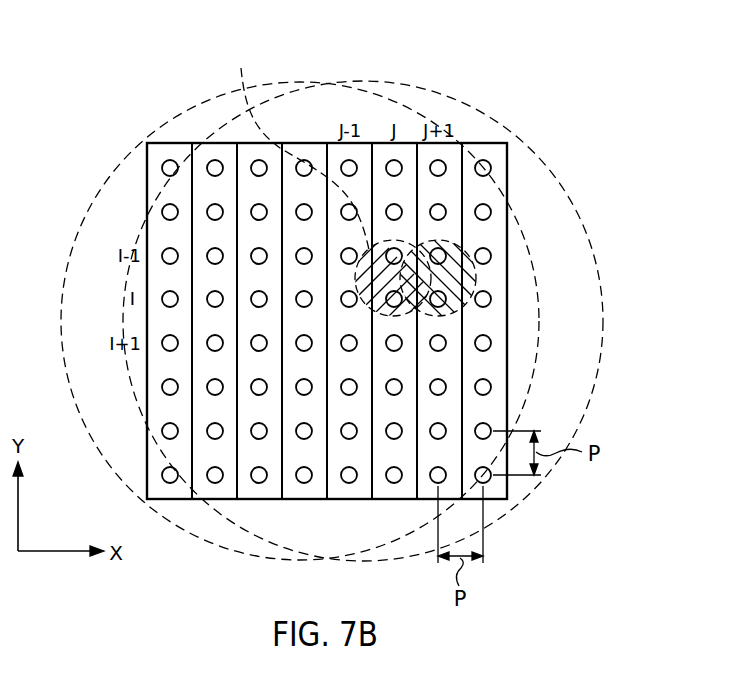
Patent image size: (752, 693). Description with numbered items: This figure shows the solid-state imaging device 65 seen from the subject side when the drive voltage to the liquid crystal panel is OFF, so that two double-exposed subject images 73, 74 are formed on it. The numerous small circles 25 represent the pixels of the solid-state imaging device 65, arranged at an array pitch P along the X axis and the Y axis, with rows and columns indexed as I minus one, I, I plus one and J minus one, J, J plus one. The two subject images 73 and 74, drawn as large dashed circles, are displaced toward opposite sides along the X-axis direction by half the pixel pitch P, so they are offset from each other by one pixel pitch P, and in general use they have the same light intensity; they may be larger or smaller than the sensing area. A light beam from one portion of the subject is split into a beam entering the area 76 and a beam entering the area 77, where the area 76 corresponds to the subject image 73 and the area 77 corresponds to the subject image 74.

The solid-state imaging device 65 is at (508, 173).
The pixels 25 is at (491, 212).
The subject image 73 is at (125, 161).
The subject image 74 is at (521, 138).
The area 76 is at (300, 147).
The area 77 is at (476, 279).